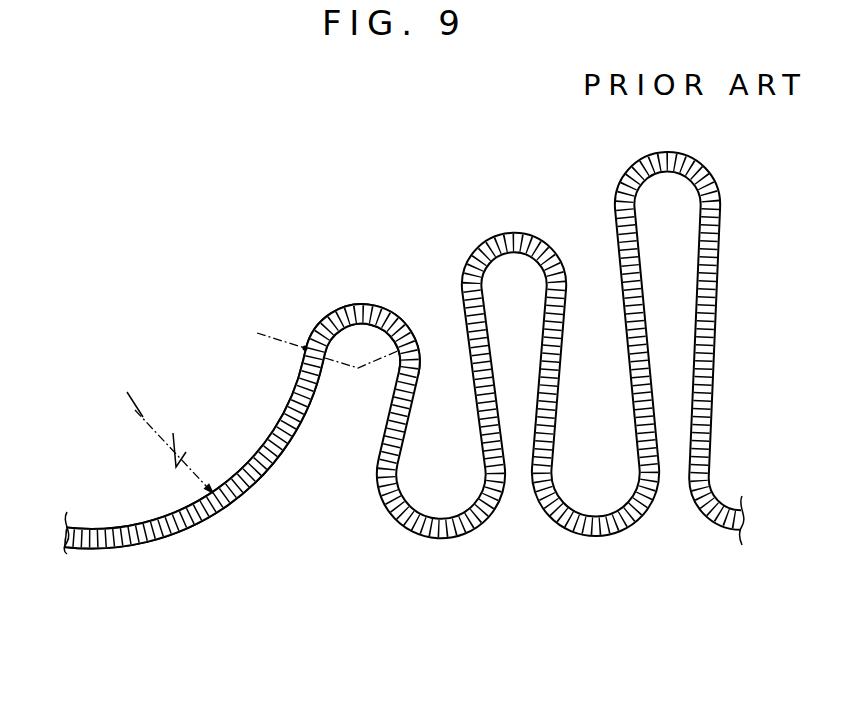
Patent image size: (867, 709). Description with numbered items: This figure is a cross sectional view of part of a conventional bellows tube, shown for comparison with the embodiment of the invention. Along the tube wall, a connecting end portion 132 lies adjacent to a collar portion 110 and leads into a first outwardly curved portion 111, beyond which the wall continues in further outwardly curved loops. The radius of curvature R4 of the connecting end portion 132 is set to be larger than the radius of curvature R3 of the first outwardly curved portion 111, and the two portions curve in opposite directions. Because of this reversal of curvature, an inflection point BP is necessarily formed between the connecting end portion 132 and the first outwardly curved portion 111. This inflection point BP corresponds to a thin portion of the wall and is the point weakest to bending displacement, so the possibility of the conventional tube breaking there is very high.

The collar portion 110 is at (112, 547).
The first outwardly curved portion 111 is at (360, 304).
The connecting end portion 132 is at (264, 487).
The inflection point BP is at (305, 348).
The radius of curvature of the first outwardly curved portion R3 is at (337, 361).
The radius of curvature of the connecting end portion R4 is at (130, 404).